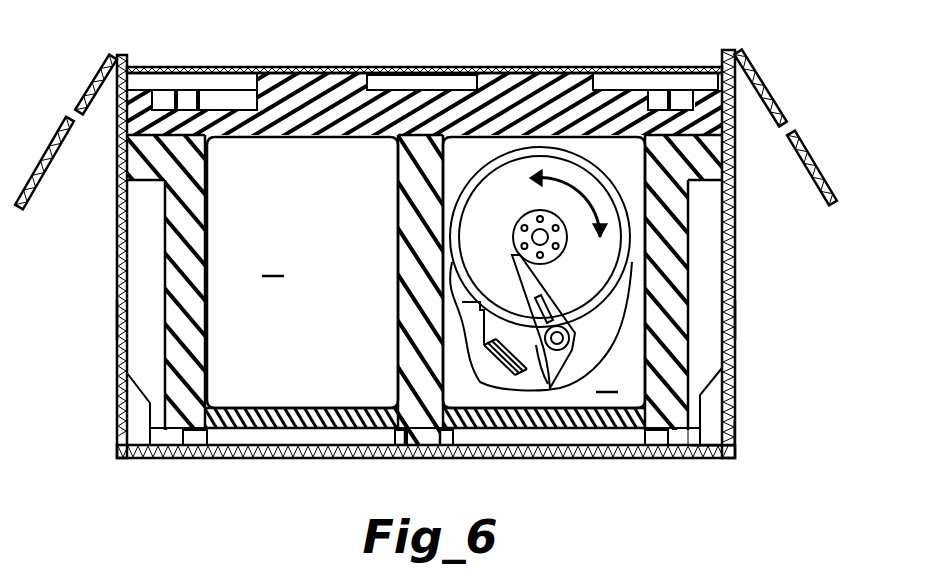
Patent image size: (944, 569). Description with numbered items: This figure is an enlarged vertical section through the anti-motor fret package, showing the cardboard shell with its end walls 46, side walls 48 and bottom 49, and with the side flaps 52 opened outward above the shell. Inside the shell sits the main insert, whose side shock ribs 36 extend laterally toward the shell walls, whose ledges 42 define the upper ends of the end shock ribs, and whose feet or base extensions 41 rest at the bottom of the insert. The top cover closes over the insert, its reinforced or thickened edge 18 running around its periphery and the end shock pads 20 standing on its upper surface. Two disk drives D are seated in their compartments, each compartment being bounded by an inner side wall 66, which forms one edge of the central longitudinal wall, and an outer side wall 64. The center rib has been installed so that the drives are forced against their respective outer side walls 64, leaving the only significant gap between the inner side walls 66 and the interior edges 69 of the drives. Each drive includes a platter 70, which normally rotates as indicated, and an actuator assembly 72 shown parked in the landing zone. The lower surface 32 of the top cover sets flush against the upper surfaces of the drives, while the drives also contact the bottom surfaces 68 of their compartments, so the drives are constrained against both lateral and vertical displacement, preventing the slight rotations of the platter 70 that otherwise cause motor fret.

The reinforced/thickened edge 18 is at (232, 88).
The end shock pads 20 is at (318, 110).
The lower surface of the top cover 32 is at (336, 130).
The end walls 46 is at (178, 82).
The side flaps 52 is at (58, 145).
The ledges 42 is at (128, 172).
The outer side wall 64 is at (220, 180).
The side walls 48 is at (118, 308).
The side shock ribs 36 is at (148, 352).
The feet/base extensions 41 is at (205, 448).
The bottom surfaces 68 is at (306, 405).
The inner side wall 66 is at (400, 325).
The interior edges of the disk drives 69 is at (400, 300).
The platter 70 is at (549, 168).
The actuator assembly 72 is at (555, 305).
The bottom 49 is at (703, 458).